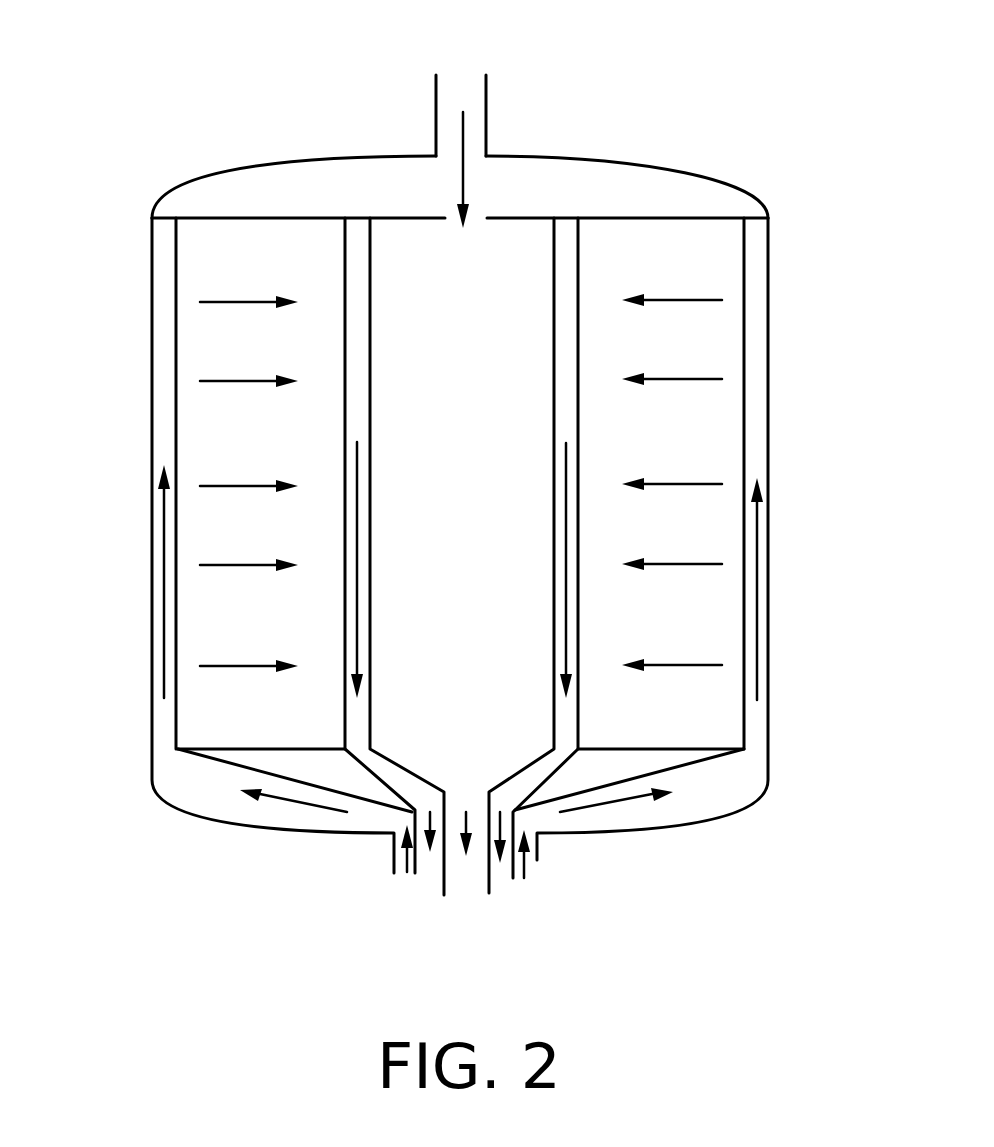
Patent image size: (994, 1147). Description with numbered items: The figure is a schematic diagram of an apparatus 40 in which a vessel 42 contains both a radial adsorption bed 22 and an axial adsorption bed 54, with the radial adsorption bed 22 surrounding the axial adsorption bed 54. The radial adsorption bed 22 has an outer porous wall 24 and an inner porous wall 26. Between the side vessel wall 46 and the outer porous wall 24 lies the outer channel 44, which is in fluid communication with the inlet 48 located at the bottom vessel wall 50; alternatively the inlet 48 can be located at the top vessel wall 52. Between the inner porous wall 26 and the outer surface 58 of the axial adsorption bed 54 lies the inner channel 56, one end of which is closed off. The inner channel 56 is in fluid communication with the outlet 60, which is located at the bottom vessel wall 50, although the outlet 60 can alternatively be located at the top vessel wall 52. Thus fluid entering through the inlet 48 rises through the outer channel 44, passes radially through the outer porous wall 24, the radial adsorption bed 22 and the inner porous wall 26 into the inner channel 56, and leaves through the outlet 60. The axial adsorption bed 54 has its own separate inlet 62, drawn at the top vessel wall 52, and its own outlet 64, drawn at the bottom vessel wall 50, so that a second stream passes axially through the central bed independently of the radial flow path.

The apparatus 40 is at (736, 80).
The vessel 42 is at (782, 352).
The outer channel 44 is at (160, 422).
The side vessel wall 46 is at (770, 452).
The radial adsorption bed 22 is at (160, 330).
The outer porous wall 24 is at (176, 579).
The inner porous wall 26 is at (345, 358).
The inner channel 56 is at (353, 420).
The axial adsorption bed 54 is at (572, 277).
The outer surface 58 is at (555, 533).
The top vessel wall 52 is at (573, 156).
The bottom vessel wall 50 is at (713, 817).
The inlet 62 is at (468, 104).
The outlet 60 is at (430, 867).
The outlet 64 is at (472, 885).
The inlet 48 is at (537, 860).